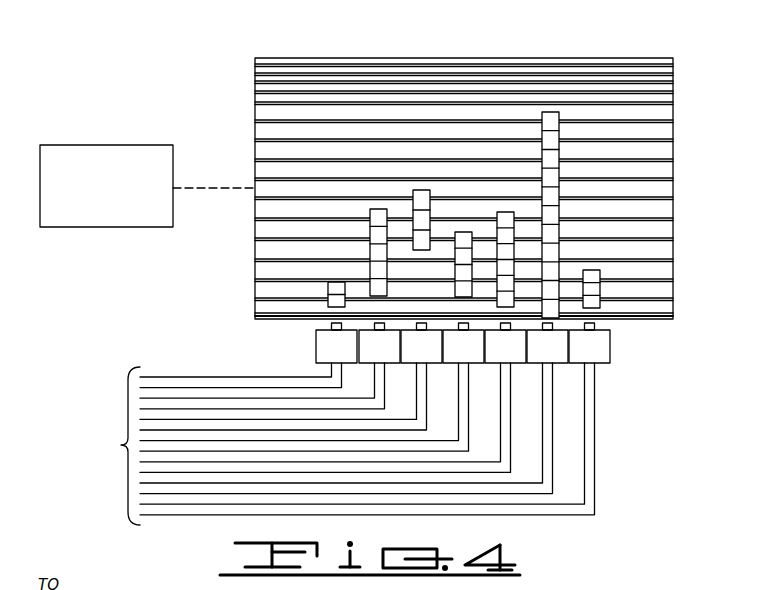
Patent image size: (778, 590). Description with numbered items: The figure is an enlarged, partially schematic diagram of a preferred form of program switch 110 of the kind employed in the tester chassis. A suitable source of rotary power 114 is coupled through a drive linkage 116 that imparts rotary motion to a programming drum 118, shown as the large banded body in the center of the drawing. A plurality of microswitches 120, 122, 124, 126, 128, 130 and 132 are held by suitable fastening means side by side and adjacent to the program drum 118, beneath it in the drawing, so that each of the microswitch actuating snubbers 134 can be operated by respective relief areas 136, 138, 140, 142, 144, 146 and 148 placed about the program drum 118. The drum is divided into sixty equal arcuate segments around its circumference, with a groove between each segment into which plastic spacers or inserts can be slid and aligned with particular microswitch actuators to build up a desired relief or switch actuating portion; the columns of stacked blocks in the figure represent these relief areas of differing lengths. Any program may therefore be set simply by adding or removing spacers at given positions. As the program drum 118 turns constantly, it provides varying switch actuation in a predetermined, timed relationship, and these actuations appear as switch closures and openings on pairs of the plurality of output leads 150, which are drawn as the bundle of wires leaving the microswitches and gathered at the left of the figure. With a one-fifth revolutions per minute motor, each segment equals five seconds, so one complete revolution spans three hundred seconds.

The program switch 110 is at (488, 168).
The source of rotary power 114 is at (102, 145).
The drive linkage 116 is at (190, 192).
The programming drum 118 is at (675, 194).
The microswitch 120 is at (336, 346).
The microswitch 122 is at (379, 343).
The microswitch 124 is at (421, 343).
The microswitch 126 is at (463, 346).
The microswitch 128 is at (505, 343).
The microswitch 130 is at (547, 343).
The microswitch 132 is at (589, 346).
The microswitch actuating snubber 134 is at (327, 325).
The relief area 136 is at (334, 282).
The relief area 138 is at (378, 209).
The relief area 140 is at (422, 190).
The relief area 142 is at (470, 211).
The relief area 144 is at (506, 212).
The relief area 146 is at (552, 178).
The relief area 148 is at (591, 270).
The output leads 150 is at (339, 444).